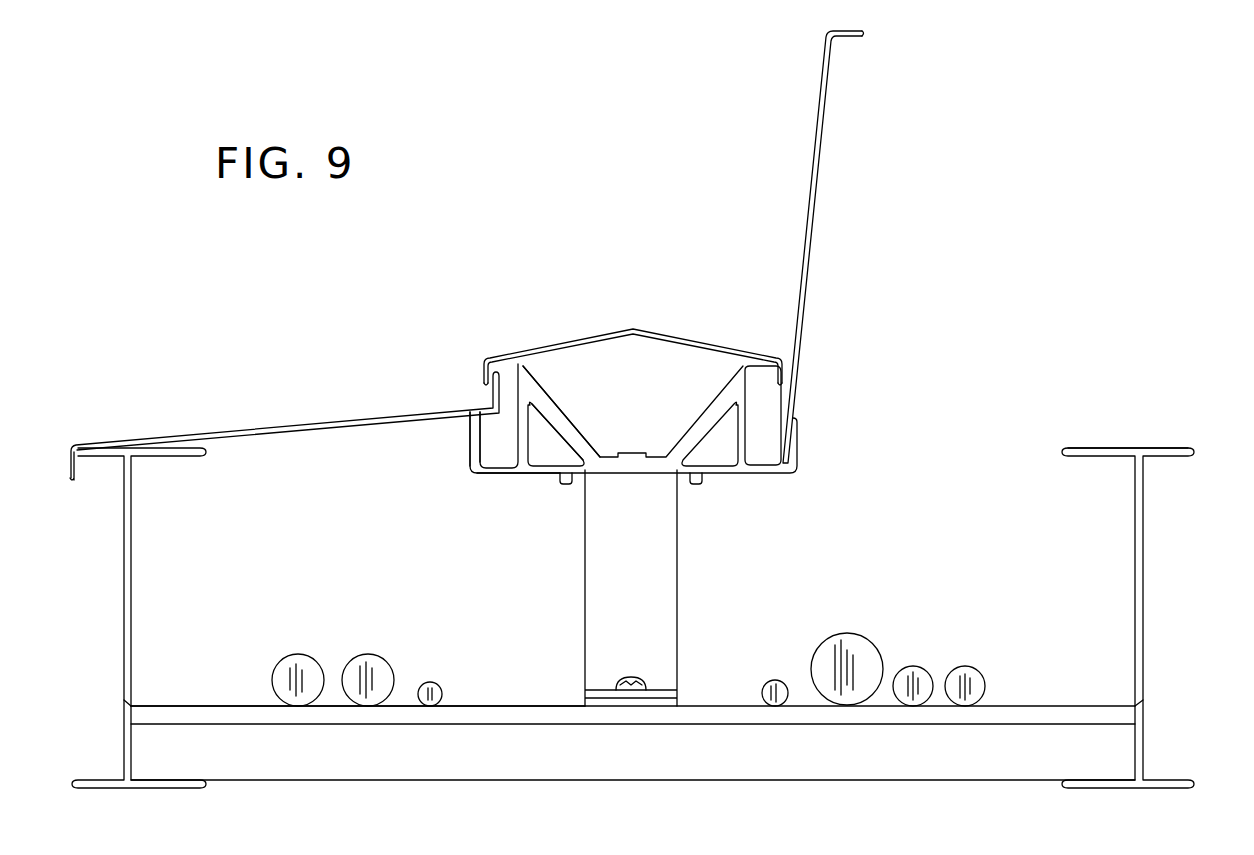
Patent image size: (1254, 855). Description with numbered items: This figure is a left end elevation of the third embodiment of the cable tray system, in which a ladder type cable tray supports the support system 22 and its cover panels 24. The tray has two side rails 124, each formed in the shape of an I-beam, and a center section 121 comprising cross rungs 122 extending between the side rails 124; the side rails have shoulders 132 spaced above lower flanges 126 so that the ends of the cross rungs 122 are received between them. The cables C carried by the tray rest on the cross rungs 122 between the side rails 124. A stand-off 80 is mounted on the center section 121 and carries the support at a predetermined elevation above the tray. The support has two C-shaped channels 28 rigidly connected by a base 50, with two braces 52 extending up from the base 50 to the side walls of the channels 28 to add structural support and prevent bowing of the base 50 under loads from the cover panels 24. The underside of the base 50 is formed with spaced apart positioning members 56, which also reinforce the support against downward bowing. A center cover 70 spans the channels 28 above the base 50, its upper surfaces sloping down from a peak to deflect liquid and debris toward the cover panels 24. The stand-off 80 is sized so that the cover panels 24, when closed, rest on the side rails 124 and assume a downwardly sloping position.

The support system 22 is at (581, 461).
The cover panels 24 is at (310, 415).
The C-shaped channel 28 is at (470, 443).
The base 50 is at (530, 478).
The braces 52 is at (625, 390).
The positioning members 56 is at (700, 486).
The center cover 70 is at (528, 362).
The stand-off 80 is at (650, 628).
The center section 121 is at (1192, 400).
The cross rungs 122 is at (300, 781).
The side rails 124 is at (125, 578).
The lower flanges 126 is at (540, 705).
The shoulders 132 is at (235, 660).
The cables C is at (425, 683).